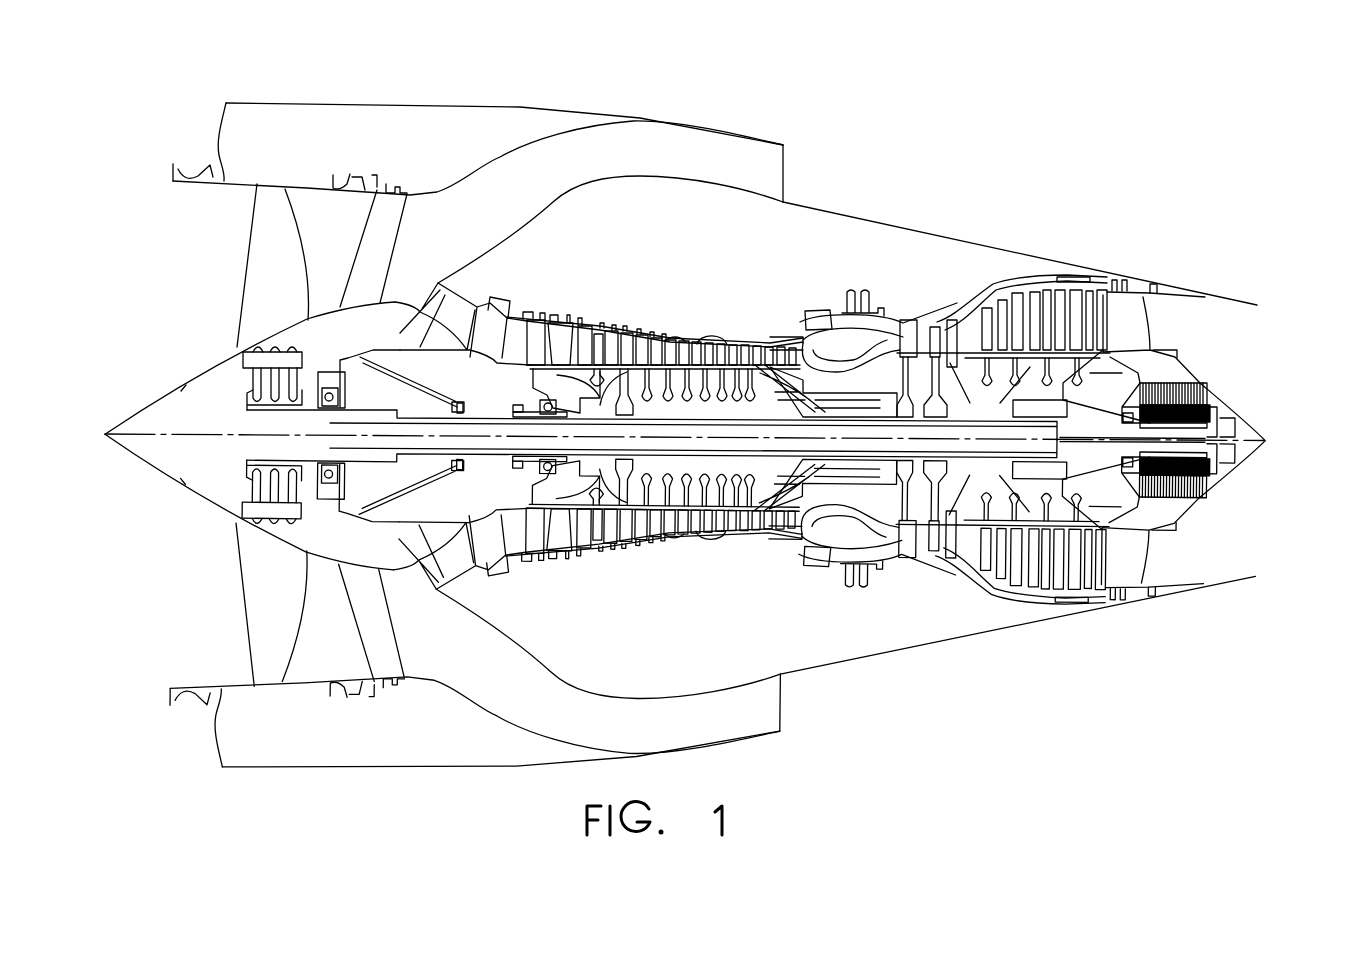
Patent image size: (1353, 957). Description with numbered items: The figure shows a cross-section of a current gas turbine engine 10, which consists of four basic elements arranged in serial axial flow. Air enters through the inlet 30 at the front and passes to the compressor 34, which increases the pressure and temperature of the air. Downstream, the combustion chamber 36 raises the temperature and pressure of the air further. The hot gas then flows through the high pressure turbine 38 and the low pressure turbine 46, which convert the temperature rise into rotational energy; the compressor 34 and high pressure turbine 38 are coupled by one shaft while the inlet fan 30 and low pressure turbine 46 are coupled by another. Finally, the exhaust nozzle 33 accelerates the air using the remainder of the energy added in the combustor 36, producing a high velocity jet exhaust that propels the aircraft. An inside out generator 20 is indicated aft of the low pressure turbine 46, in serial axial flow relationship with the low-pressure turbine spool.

The gas turbine engine 10 is at (714, 398).
The inside out generator 20 is at (1236, 372).
The inlet 30 is at (214, 265).
The exhaust nozzle 33 is at (1238, 550).
The compressor 34 is at (583, 312).
The combustion chamber 36 is at (847, 346).
The high pressure turbine 38 is at (989, 293).
The low pressure turbine 46 is at (907, 330).